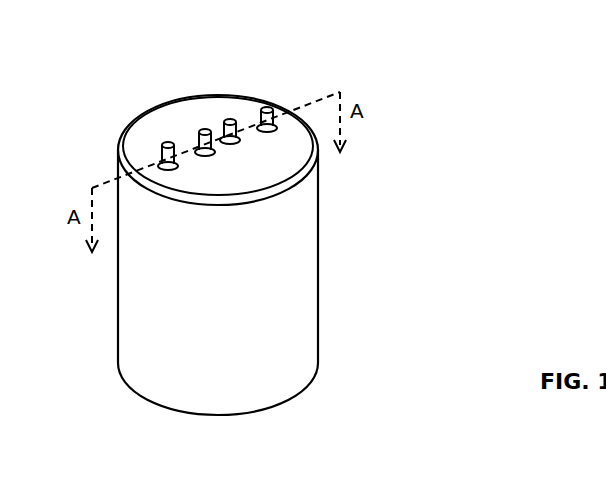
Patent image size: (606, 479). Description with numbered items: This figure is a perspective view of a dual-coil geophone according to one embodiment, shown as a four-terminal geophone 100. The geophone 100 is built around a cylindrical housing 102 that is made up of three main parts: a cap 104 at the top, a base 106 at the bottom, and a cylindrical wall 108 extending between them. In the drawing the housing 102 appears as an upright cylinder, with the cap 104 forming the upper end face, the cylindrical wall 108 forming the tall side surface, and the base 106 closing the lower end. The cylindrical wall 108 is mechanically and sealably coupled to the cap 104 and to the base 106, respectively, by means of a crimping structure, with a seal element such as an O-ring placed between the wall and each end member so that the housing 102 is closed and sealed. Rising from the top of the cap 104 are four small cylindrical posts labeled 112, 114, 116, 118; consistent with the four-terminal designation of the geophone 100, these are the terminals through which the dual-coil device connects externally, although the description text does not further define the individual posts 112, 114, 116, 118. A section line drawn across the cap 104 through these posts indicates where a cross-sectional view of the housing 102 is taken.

The four-terminal geophone 100 is at (462, 95).
The cylindrical housing 102 is at (290, 255).
The cap 104 is at (272, 165).
The base 106 is at (147, 419).
The cylindrical wall 108 is at (308, 300).
The terminal 112 is at (163, 147).
The terminal 114 is at (200, 130).
The terminal 116 is at (227, 120).
The terminal 118 is at (264, 108).